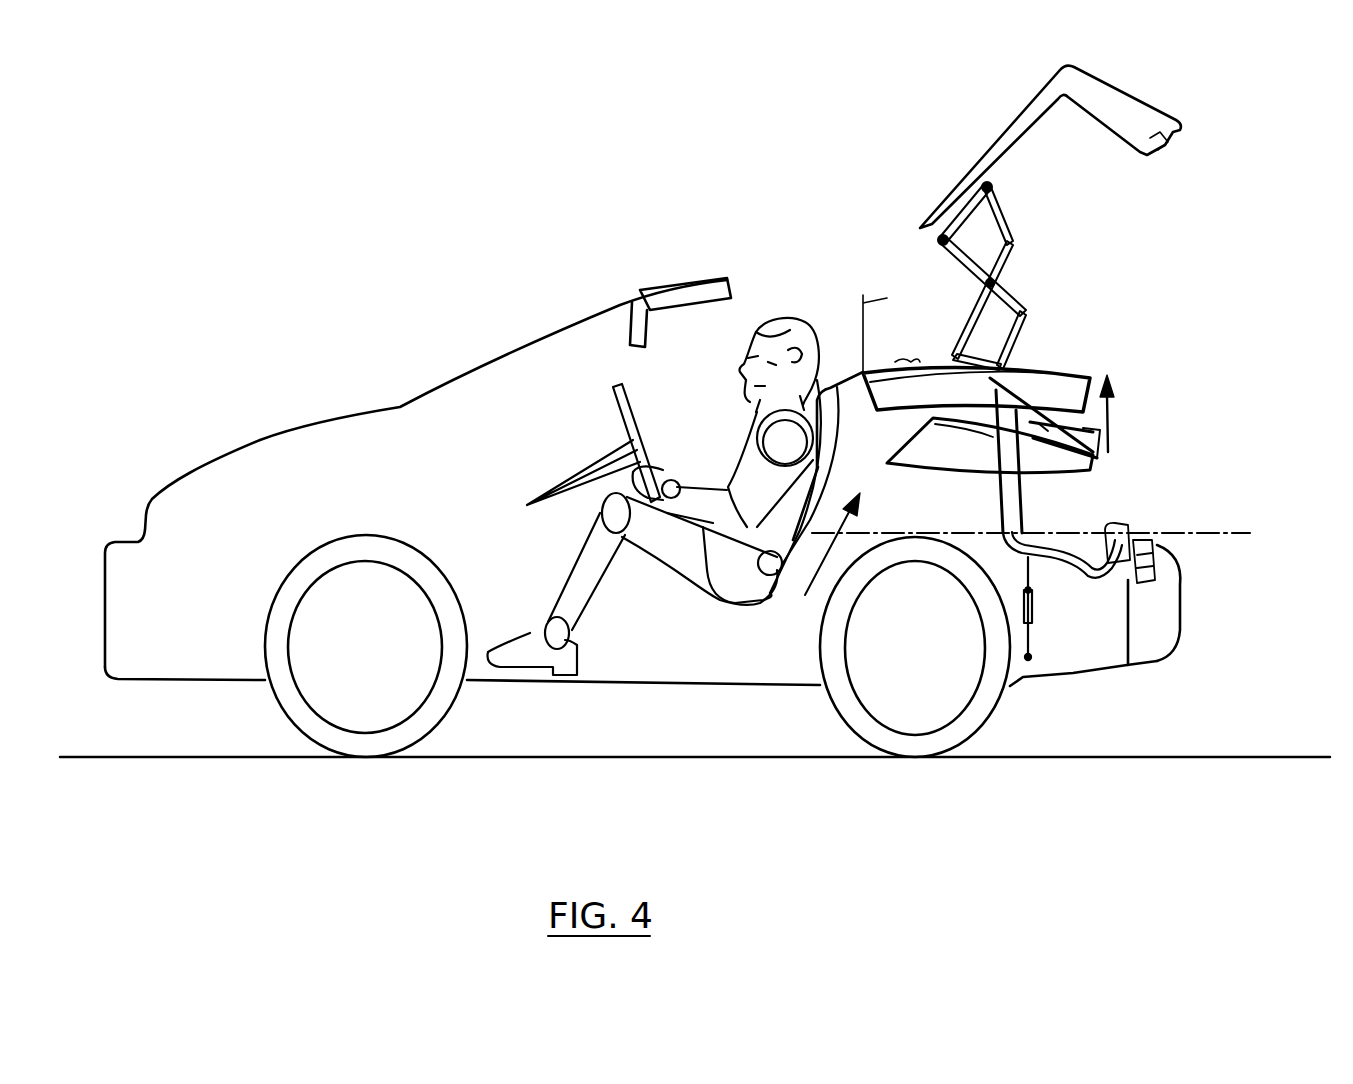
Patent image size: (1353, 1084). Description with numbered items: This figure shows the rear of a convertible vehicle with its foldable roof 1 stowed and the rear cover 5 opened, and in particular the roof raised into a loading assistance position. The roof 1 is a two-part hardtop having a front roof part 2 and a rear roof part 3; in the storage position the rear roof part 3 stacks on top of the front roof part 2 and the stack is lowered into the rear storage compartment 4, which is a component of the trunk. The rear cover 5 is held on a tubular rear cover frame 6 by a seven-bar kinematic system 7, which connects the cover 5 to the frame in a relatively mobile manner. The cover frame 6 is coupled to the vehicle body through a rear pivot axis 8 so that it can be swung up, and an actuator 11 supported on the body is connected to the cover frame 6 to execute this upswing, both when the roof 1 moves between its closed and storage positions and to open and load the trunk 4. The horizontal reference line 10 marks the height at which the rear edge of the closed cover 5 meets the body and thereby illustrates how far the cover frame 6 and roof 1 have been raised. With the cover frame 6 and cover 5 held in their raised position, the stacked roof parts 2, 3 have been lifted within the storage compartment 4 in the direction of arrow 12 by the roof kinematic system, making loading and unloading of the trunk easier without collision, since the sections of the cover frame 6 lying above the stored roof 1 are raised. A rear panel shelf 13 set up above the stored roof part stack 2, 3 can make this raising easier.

The foldable roof 1 is at (1024, 358).
The front roof part 2 is at (917, 455).
The rear roof part 3 is at (882, 390).
The rear storage compartment 4 is at (827, 558).
The rear cover 5 is at (990, 140).
The rear cover frame 6 is at (1033, 568).
The multiple-bar kinematic system 7 is at (1038, 261).
The rear pivot axis 8 is at (1135, 583).
The horizontal reference line 10 is at (1208, 530).
The actuator 11 is at (1033, 625).
The arrow 12 is at (1115, 420).
The rear panel shelf 13 is at (903, 360).